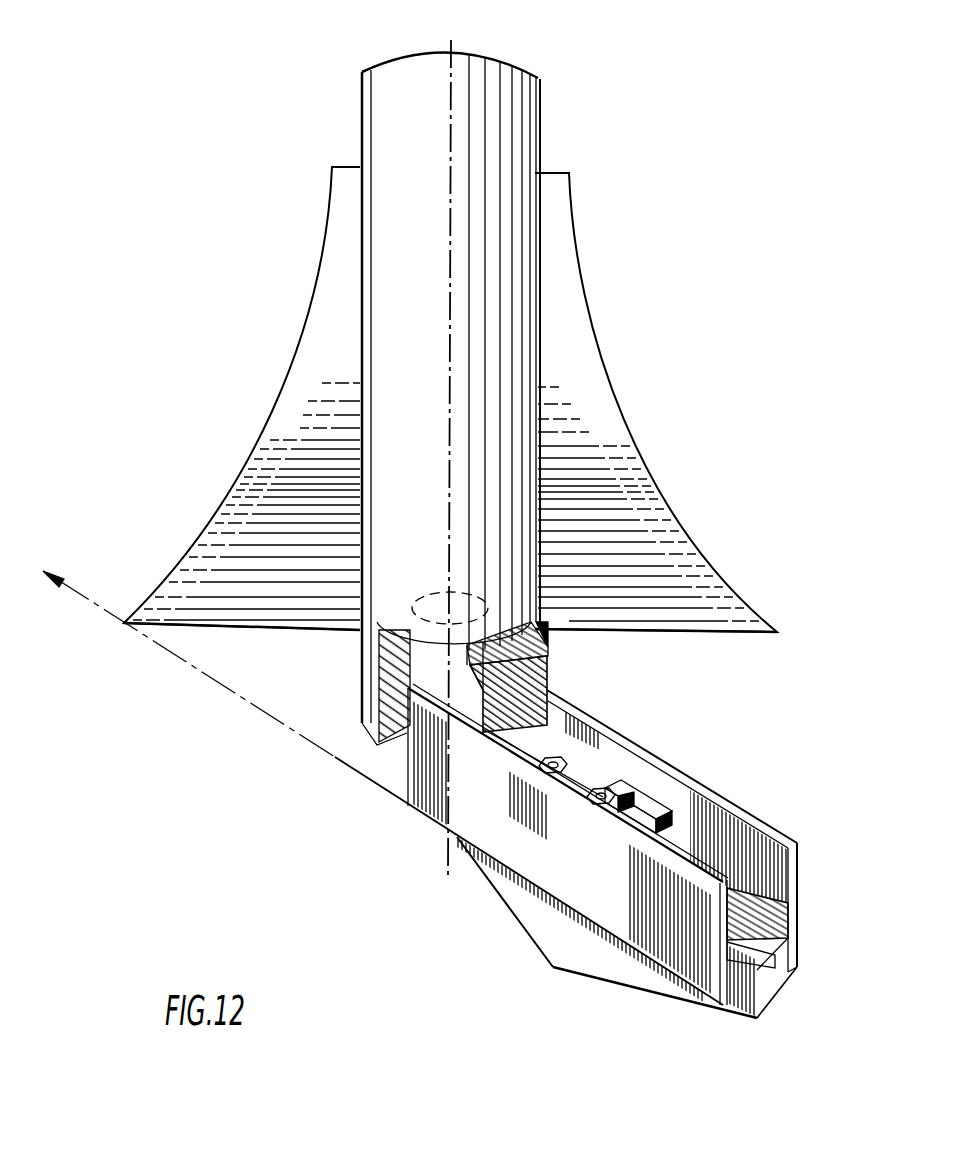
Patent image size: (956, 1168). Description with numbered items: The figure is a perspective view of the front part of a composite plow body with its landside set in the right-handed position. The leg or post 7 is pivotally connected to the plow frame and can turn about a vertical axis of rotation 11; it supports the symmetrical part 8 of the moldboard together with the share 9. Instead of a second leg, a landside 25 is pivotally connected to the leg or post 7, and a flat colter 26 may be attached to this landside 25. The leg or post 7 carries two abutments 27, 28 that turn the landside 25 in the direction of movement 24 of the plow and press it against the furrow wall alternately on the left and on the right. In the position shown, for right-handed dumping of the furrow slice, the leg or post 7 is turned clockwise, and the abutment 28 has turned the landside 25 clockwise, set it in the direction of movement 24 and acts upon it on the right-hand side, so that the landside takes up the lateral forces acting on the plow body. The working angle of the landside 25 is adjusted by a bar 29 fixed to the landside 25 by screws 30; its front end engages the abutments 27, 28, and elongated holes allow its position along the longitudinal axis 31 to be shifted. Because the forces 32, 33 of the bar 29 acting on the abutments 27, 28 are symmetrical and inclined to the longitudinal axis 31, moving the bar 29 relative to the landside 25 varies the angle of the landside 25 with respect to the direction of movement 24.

The leg or post 7 is at (455, 62).
The symmetrical part of a moldboard 8 is at (612, 412).
The share 9 is at (742, 620).
The vertical axis of rotation 11 is at (449, 457).
The direction of movement 24 is at (189, 652).
The landside 25 is at (667, 943).
The flat colter 26 is at (523, 923).
The abutment 27 is at (390, 705).
The abutment 28 is at (530, 643).
The bar 29 is at (610, 779).
The screws 30 is at (568, 758).
The longitudinal axis 31 is at (787, 943).
The force 32 is at (470, 701).
The force 33 is at (535, 650).